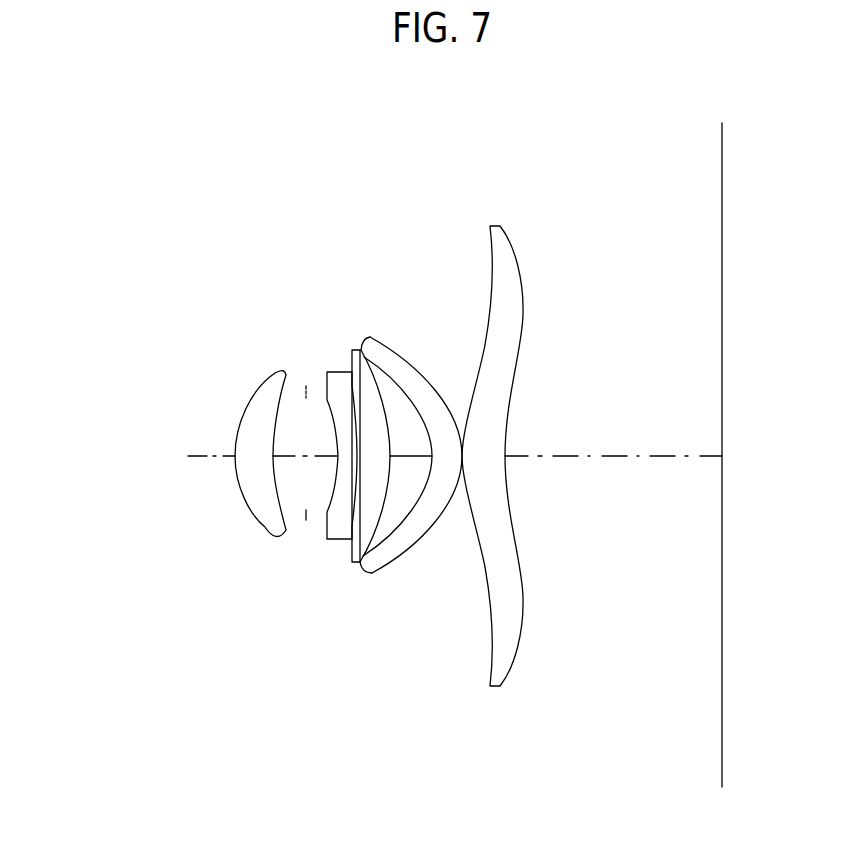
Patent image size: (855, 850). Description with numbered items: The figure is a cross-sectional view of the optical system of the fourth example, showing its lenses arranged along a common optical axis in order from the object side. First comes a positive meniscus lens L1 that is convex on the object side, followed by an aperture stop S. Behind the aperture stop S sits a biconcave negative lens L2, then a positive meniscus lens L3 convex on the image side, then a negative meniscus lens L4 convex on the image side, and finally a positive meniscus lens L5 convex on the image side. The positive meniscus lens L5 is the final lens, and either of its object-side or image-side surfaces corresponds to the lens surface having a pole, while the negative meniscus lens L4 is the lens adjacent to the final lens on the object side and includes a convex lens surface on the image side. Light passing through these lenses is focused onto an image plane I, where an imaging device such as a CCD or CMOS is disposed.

The positive meniscus lens L1 is at (282, 369).
The biconcave negative lens L2 is at (341, 372).
The positive meniscus lens L3 is at (361, 350).
The negative meniscus lens L4 is at (369, 337).
The positive meniscus lens L5 is at (494, 226).
The aperture stop S is at (306, 520).
The image plane I is at (722, 750).